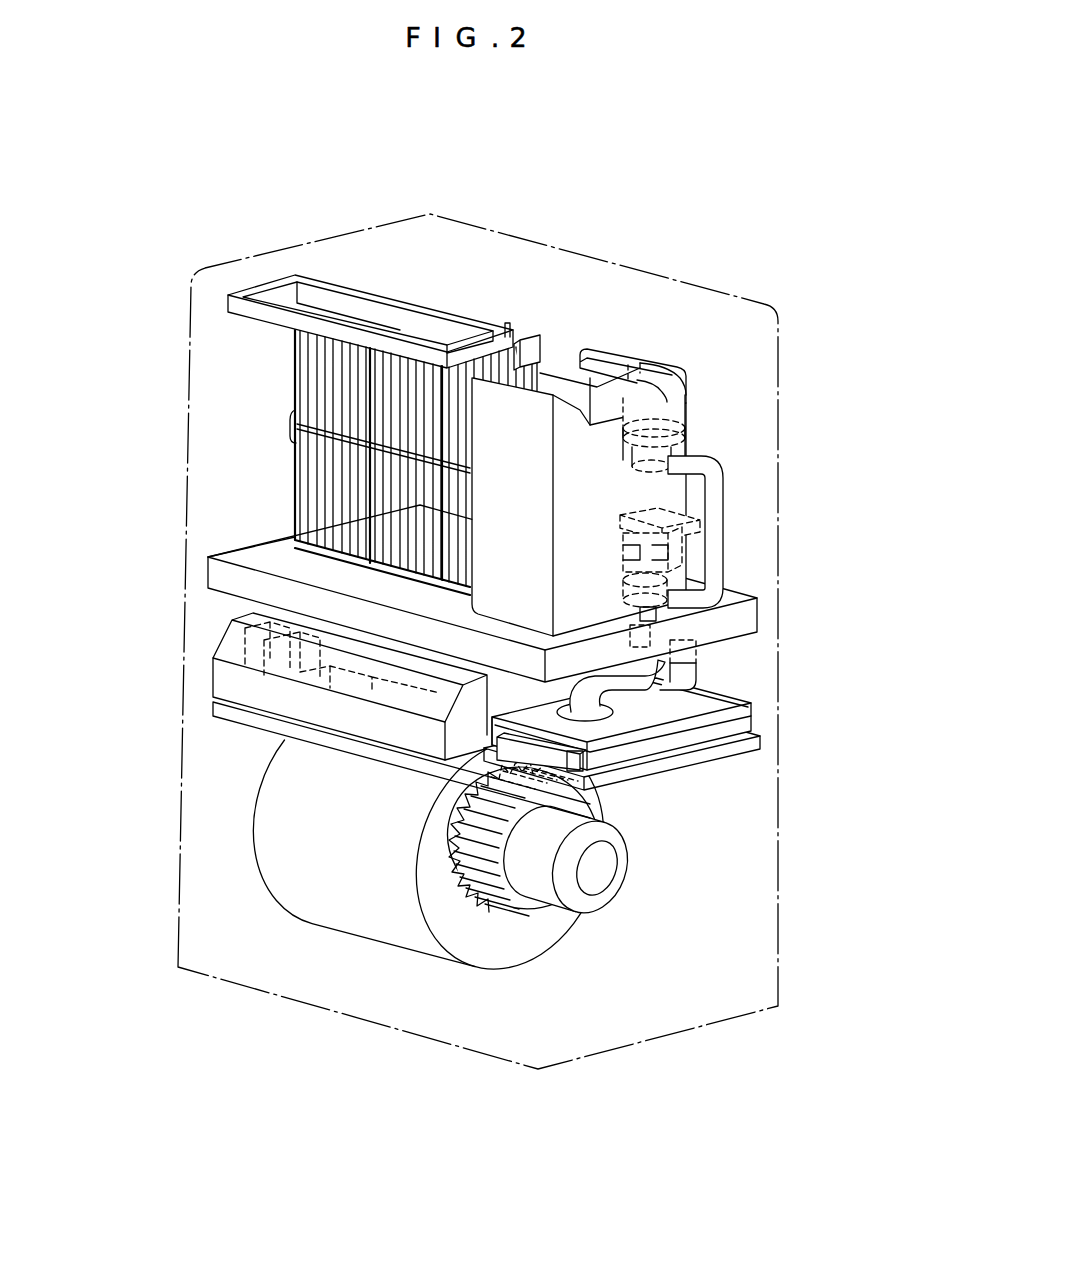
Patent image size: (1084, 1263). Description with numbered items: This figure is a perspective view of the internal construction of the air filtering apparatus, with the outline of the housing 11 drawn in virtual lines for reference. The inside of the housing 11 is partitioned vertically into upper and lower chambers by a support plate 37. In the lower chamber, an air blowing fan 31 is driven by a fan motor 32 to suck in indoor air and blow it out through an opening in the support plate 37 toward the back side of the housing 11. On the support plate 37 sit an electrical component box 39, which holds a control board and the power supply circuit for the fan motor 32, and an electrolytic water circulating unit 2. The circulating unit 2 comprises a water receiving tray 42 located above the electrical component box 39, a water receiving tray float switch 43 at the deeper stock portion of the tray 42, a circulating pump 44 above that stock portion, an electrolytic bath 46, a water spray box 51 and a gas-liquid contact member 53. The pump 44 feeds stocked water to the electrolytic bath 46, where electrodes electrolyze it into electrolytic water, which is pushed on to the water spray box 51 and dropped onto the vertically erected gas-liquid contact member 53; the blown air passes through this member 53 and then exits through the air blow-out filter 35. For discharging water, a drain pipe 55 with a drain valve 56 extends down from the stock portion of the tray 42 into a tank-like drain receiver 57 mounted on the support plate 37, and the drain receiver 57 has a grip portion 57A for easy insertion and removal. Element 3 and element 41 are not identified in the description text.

The electrolytic water circulating unit 2 is at (716, 363).
The cooling unit 3 is at (419, 242).
The housing 11 is at (727, 293).
The air blowing fan 31 is at (537, 935).
The fan motor 32 is at (600, 877).
The air blow-out filter 35 is at (258, 287).
The support plate 37 is at (230, 718).
The electrical component box 39 is at (228, 683).
The tank 41 is at (607, 350).
The water receiving tray 42 is at (757, 607).
The water receiving tray float switch 43 is at (690, 653).
The circulating pump 44 is at (695, 568).
The electrolytic bath 46 is at (688, 400).
The water spray box 51 is at (530, 347).
The gas-liquid contact member 53 is at (290, 385).
The drain pipe 55 is at (688, 673).
The drain valve 56 is at (722, 697).
The drain receiver 57 is at (730, 731).
The grip portion 57A is at (555, 757).